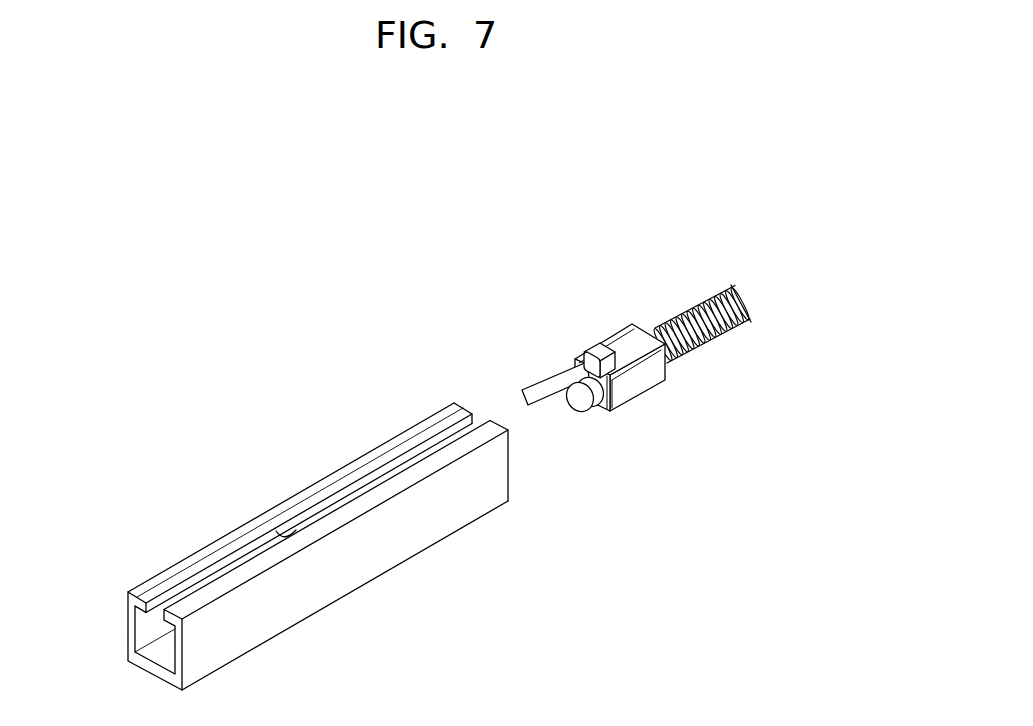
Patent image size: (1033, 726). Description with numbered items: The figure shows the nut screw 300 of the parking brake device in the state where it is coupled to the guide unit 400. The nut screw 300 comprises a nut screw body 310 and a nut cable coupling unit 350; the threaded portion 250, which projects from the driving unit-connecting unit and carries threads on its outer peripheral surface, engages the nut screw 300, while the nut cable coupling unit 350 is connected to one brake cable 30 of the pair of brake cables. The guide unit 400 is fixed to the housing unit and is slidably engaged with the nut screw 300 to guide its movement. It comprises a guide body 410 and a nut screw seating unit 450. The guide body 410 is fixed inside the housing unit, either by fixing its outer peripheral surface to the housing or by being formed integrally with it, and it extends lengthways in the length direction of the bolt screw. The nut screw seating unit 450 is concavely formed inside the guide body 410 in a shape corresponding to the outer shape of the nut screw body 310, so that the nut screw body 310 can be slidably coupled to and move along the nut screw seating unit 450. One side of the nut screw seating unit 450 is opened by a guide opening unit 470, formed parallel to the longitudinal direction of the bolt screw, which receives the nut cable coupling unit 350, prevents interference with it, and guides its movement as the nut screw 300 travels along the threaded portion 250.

The brake cable 30 is at (552, 380).
The threaded portion 250 is at (700, 317).
The nut screw 300 is at (641, 254).
The nut screw body 310 is at (638, 340).
The nut cable coupling unit 350 is at (598, 350).
The guide unit 400 is at (212, 518).
The guide body 410 is at (242, 637).
The nut screw seating unit 450 is at (149, 631).
The guide opening unit 470 is at (273, 537).